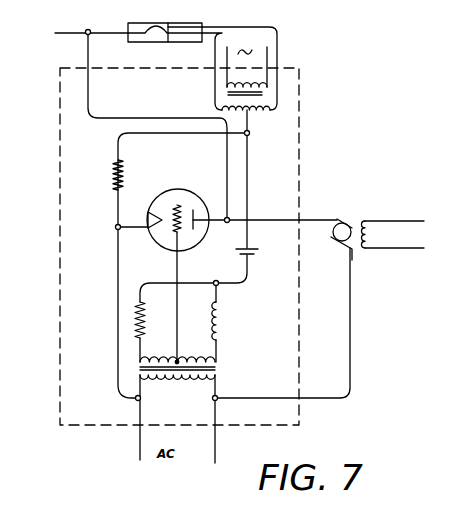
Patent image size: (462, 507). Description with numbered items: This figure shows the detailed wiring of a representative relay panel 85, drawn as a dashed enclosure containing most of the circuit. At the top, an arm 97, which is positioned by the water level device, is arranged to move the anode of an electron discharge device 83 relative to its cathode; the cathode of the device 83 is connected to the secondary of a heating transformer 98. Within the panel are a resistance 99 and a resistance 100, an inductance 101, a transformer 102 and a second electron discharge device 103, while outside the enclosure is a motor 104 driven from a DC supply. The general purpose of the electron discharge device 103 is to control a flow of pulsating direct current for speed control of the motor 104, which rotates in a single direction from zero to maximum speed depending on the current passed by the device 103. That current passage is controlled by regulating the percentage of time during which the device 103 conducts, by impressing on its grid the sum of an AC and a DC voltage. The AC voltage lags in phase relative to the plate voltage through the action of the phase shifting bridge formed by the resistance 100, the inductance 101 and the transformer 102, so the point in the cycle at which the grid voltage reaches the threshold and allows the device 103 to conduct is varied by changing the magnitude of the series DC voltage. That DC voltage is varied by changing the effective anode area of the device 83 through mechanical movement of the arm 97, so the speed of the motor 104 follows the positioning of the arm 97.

The electron discharge device 83 is at (146, 43).
The relay panel 85 is at (299, 137).
The arm 97 is at (55, 33).
The heating transformer 98 is at (216, 100).
The resistance 99 is at (132, 175).
The resistance 100 is at (155, 320).
The inductance 101 is at (234, 321).
The transformer 102 is at (195, 368).
The electron discharge device 103 is at (178, 189).
The motor 104 is at (377, 228).